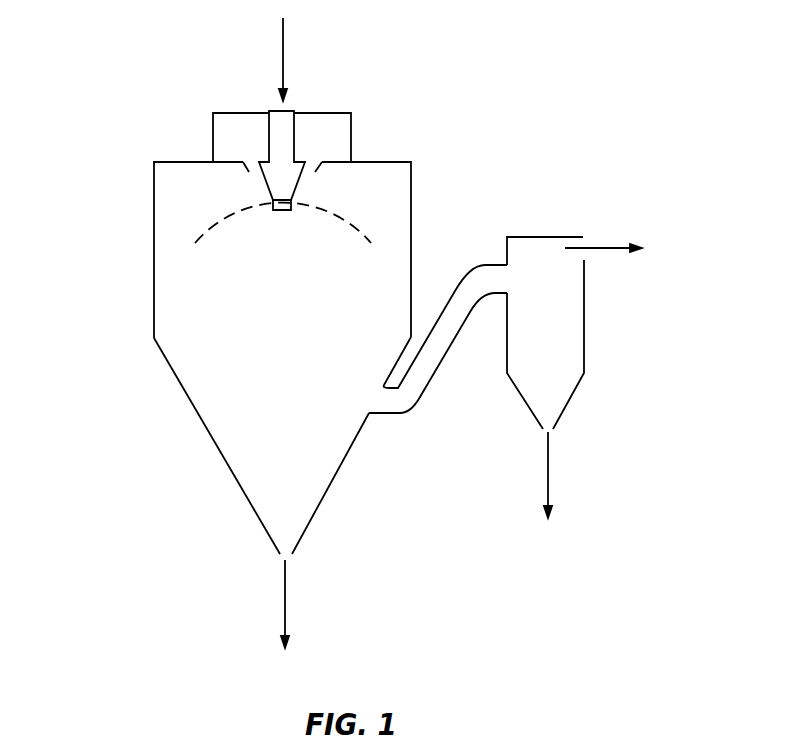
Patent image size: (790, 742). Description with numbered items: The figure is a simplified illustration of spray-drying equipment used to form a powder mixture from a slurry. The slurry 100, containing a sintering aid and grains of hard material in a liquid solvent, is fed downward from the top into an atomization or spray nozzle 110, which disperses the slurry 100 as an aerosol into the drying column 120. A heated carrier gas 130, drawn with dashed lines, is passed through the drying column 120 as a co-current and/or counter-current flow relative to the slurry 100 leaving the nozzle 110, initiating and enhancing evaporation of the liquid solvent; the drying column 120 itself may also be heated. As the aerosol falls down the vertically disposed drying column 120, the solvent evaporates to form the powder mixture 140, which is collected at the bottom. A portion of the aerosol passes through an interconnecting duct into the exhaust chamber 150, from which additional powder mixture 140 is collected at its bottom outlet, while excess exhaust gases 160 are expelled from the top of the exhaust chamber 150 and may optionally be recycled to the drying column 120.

The slurry 100 is at (283, 50).
The spray nozzle 110 is at (267, 178).
The drying column 120 is at (411, 222).
The heated carrier gas 130 is at (235, 273).
The powder mixture 140 is at (417, 555).
The exhaust chamber 150 is at (584, 339).
The exhaust gases 160 is at (625, 248).